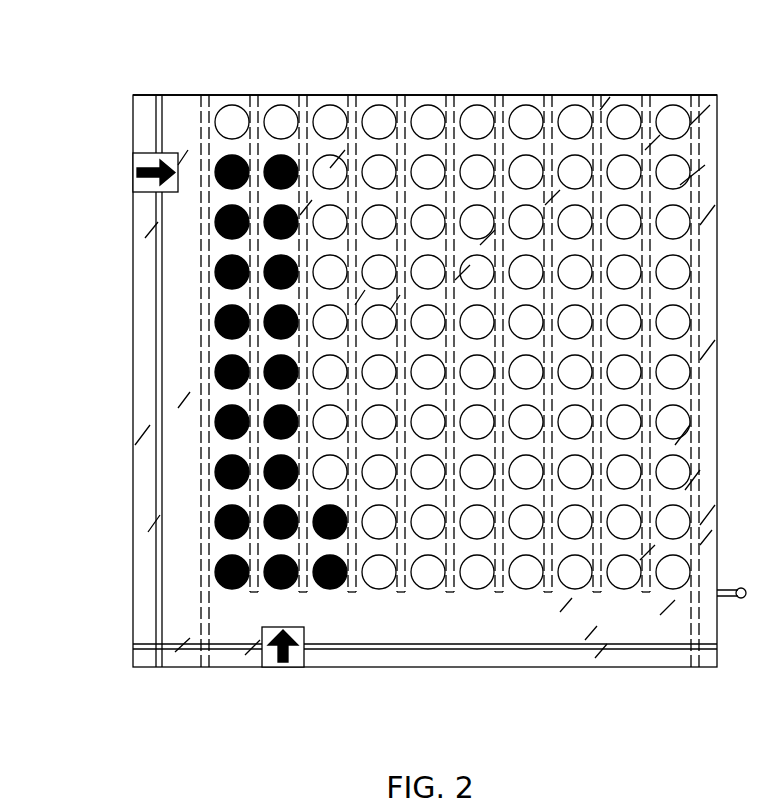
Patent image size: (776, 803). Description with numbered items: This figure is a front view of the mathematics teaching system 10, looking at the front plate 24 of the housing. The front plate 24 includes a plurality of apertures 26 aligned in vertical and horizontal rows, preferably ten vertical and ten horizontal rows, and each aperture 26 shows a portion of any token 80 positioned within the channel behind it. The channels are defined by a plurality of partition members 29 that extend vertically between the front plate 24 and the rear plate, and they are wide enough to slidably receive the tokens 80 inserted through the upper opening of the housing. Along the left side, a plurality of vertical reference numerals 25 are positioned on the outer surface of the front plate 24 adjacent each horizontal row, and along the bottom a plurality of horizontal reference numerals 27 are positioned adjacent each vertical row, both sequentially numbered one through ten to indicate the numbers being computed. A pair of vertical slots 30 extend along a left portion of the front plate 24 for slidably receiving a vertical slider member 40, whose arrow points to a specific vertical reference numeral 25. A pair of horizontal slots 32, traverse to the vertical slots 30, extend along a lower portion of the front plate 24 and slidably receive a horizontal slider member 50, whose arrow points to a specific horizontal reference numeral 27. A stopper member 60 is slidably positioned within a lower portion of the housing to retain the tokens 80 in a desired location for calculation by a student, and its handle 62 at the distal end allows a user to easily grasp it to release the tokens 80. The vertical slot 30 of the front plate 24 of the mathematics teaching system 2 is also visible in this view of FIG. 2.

The microtiter plate array device 2 is at (737, 176).
The mathematics teaching system 10 is at (728, 78).
The front plate 24 is at (592, 105).
The vertical reference numerals 25 is at (162, 110).
The apertures 26 is at (425, 112).
The horizontal reference numerals 27 is at (578, 620).
The partition members 29 is at (258, 103).
The vertical slots 30 is at (158, 537).
The horizontal slots 32 is at (347, 648).
The vertical slider member 40 is at (146, 184).
The horizontal slider member 50 is at (298, 660).
The stopper member 60 is at (736, 578).
The handle 62 is at (745, 600).
The tokens 80 is at (232, 482).